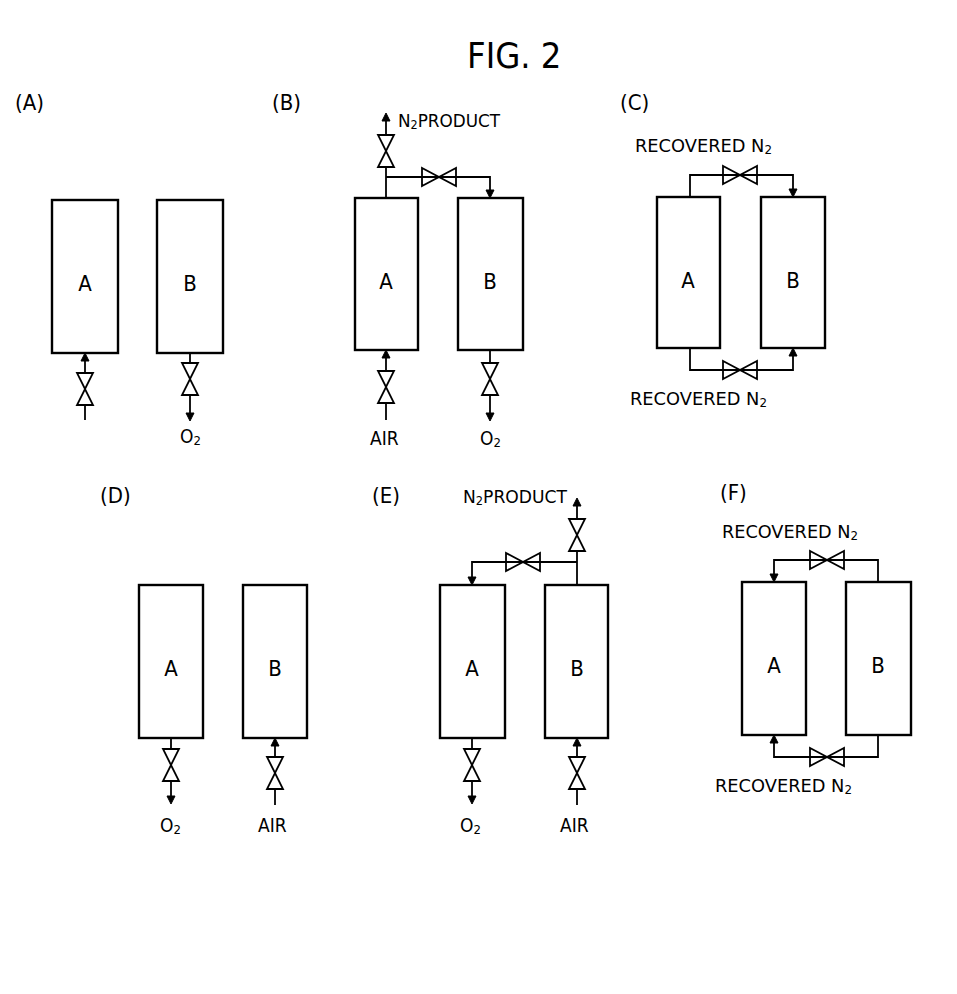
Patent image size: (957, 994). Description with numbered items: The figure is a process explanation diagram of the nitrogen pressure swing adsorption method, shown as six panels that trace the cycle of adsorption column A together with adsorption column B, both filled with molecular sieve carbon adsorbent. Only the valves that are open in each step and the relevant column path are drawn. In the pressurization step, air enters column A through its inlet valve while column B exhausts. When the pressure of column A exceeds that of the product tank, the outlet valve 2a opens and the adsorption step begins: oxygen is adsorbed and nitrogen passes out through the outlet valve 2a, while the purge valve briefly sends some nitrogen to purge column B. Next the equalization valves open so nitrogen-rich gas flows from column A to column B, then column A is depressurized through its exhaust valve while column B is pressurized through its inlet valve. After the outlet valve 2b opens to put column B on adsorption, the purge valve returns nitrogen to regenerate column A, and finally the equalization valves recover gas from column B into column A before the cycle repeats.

The outlet valve 2a is at (378, 151).
The outlet valve 2b is at (590, 530).